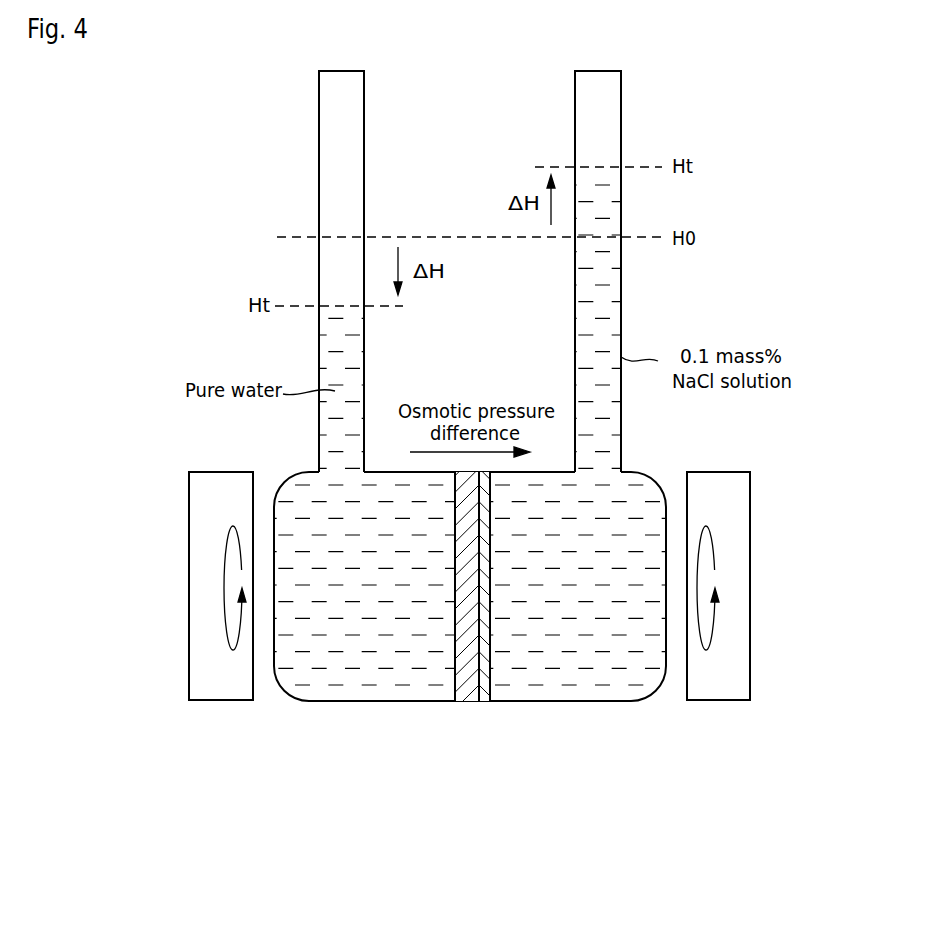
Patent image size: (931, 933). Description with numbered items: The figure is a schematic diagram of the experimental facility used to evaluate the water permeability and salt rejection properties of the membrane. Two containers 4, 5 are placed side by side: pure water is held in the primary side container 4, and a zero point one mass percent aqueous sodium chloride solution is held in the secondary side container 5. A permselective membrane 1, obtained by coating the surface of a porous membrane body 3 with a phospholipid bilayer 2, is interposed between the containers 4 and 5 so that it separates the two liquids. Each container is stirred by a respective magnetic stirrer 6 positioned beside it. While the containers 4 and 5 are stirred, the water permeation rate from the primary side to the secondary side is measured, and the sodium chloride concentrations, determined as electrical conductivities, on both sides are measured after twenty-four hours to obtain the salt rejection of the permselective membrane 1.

The permselective membrane 1 is at (480, 630).
The phospholipid bilayer 2 is at (485, 680).
The porous membrane (body) 3 is at (467, 693).
The container 4 is at (300, 701).
The container 5 is at (635, 701).
The stirrer 6 is at (189, 666).